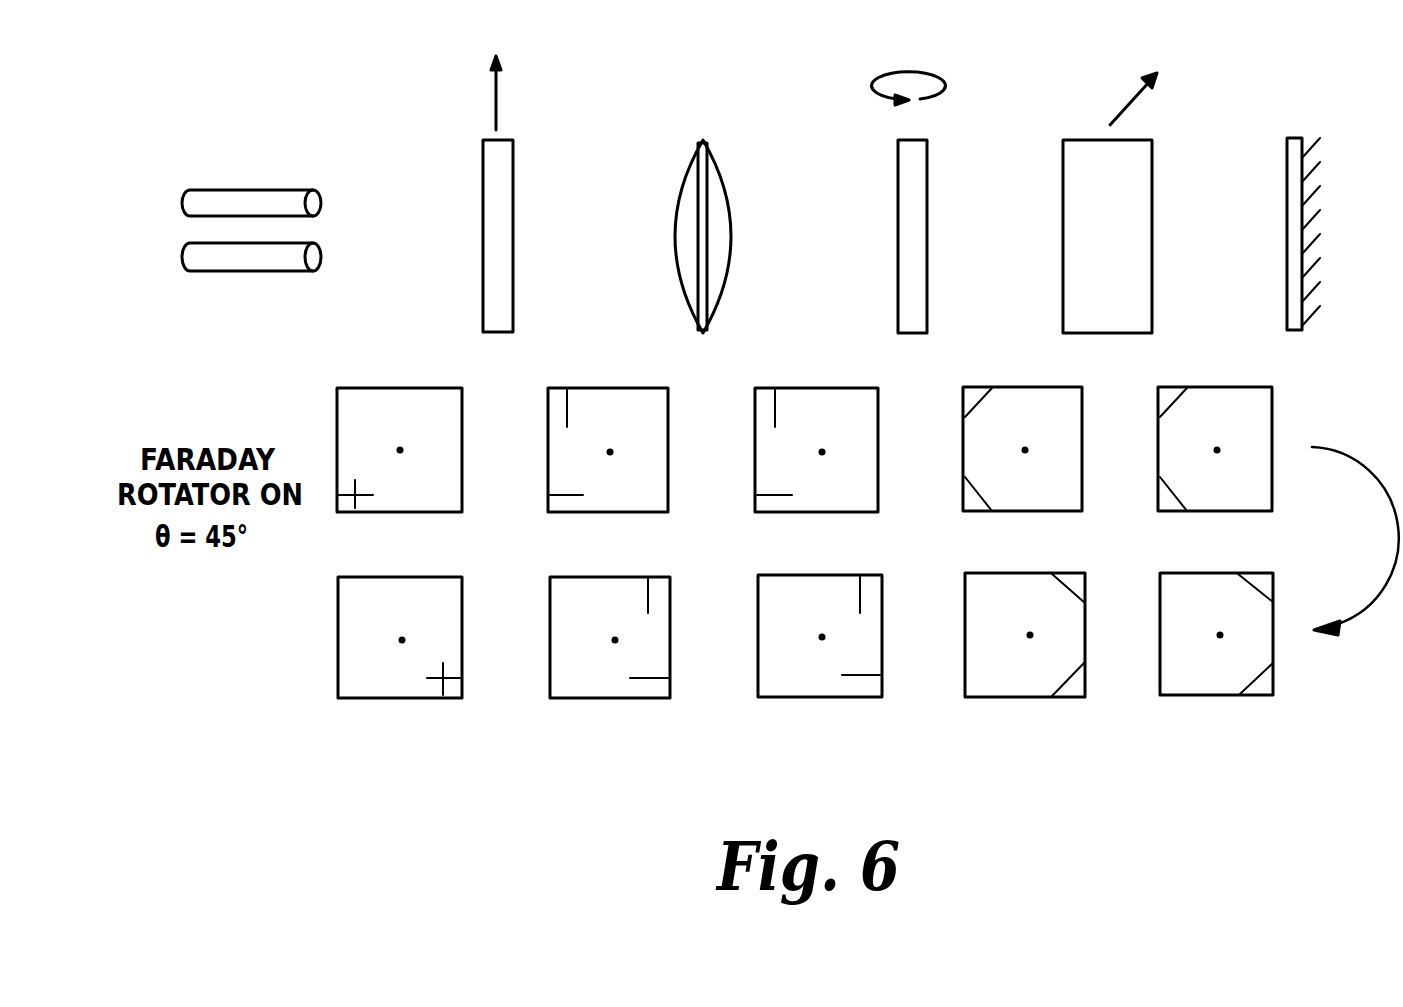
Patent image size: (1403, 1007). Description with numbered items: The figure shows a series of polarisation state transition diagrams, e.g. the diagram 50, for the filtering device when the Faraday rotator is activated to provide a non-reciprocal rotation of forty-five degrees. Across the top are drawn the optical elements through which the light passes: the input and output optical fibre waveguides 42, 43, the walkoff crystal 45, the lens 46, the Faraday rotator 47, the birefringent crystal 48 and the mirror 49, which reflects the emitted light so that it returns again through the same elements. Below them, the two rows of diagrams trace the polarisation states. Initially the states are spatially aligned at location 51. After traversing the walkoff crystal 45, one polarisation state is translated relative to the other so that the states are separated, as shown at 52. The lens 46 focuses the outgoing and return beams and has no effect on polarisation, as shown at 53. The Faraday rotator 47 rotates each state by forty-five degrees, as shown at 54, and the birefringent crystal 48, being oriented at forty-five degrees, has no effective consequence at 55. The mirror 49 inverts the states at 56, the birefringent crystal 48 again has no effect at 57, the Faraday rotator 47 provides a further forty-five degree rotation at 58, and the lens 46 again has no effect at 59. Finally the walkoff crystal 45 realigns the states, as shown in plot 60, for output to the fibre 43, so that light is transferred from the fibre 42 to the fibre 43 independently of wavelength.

The input optical fibre waveguide 42 is at (250, 262).
The output optical fibre waveguide 43 is at (250, 200).
The walkoff crystal 45 is at (513, 188).
The lens 46 is at (725, 203).
The Faraday rotator 47 is at (927, 226).
The birefringent crystal 48 is at (1152, 205).
The mirror 49 is at (1297, 141).
The polarisation state diagram 50 is at (399, 444).
The initial polarisation state location 51 is at (358, 506).
The polarisation state after walkoff crystal 52 is at (598, 389).
The polarisation state after lens 53 is at (821, 389).
The polarisation state after Faraday rotator 54 is at (1012, 387).
The polarisation state after birefringent crystal 55 is at (1226, 387).
The polarisation state after mirror 56 is at (1160, 683).
The polarisation state after return through birefringent crystal 57 is at (965, 677).
The polarisation state after return through Faraday rotator 58 is at (757, 677).
The polarisation state after return through lens 59 is at (550, 668).
The output polarisation state plot 60 is at (337, 667).